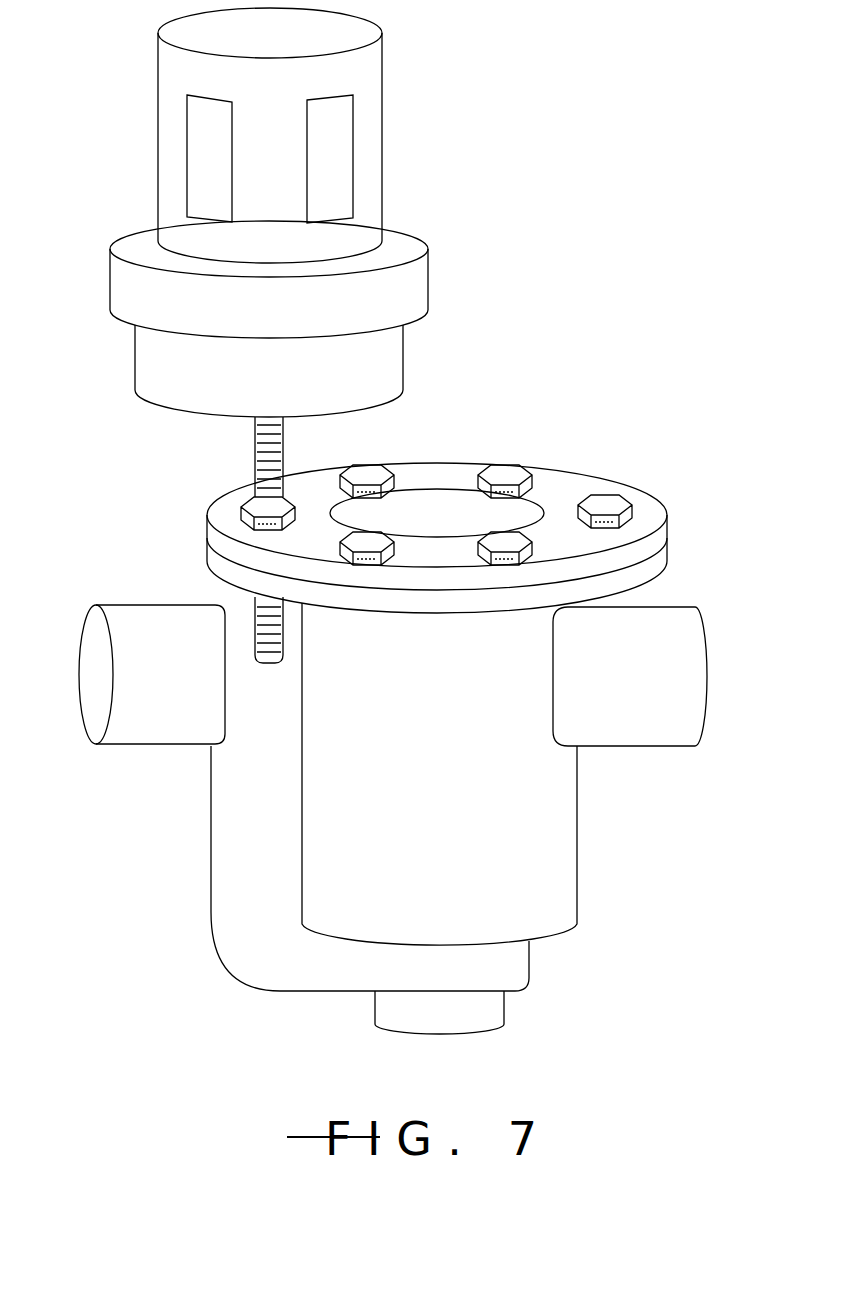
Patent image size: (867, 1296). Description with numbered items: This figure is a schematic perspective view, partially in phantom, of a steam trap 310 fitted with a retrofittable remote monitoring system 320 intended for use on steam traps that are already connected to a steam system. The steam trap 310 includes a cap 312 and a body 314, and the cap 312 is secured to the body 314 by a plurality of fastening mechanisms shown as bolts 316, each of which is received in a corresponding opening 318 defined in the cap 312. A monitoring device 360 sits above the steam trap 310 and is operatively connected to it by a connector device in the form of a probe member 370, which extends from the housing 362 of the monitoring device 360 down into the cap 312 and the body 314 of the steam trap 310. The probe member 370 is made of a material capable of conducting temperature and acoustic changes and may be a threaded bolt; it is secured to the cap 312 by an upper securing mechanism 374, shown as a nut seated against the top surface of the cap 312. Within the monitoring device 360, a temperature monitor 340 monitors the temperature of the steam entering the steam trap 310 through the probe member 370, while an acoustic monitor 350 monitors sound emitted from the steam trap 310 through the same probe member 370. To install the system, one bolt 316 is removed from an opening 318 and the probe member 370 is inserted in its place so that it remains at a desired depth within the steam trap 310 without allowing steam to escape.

The steam trap 310 is at (502, 492).
The cap 312 is at (667, 538).
The body 314 is at (577, 889).
The bolt 316 is at (508, 468).
The opening 318 is at (604, 525).
The retrofittable remote monitoring system 320 is at (665, 132).
The temperature monitor 340 is at (194, 114).
The acoustic monitor 350 is at (346, 114).
The monitoring device 360 is at (398, 187).
The housing 362 is at (135, 365).
The probe member 370 is at (242, 467).
The upper securing mechanism 374 is at (262, 530).